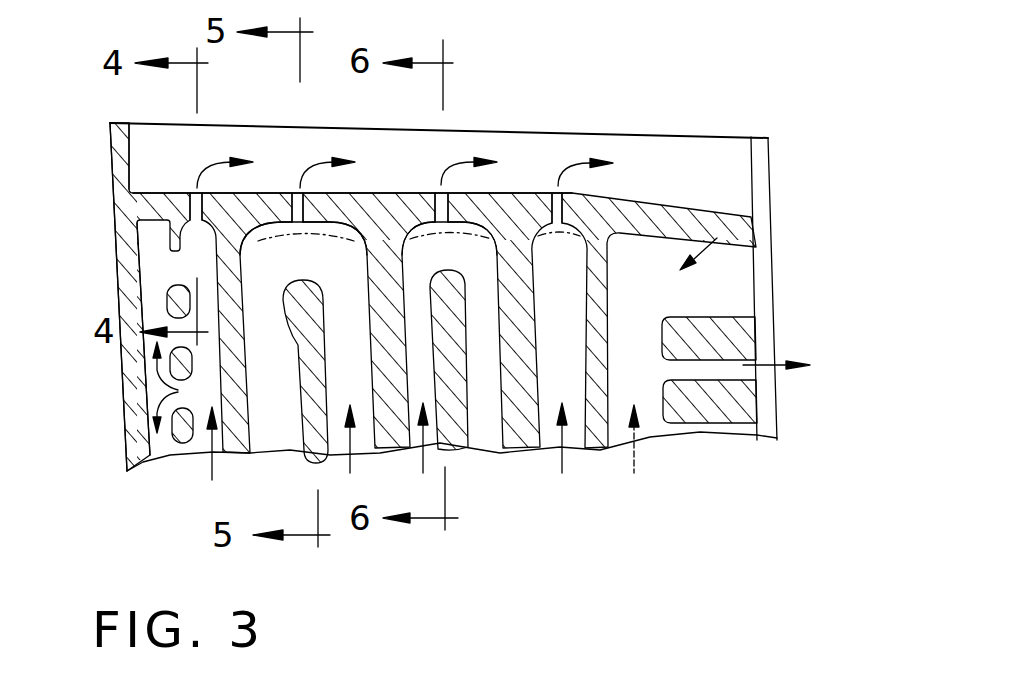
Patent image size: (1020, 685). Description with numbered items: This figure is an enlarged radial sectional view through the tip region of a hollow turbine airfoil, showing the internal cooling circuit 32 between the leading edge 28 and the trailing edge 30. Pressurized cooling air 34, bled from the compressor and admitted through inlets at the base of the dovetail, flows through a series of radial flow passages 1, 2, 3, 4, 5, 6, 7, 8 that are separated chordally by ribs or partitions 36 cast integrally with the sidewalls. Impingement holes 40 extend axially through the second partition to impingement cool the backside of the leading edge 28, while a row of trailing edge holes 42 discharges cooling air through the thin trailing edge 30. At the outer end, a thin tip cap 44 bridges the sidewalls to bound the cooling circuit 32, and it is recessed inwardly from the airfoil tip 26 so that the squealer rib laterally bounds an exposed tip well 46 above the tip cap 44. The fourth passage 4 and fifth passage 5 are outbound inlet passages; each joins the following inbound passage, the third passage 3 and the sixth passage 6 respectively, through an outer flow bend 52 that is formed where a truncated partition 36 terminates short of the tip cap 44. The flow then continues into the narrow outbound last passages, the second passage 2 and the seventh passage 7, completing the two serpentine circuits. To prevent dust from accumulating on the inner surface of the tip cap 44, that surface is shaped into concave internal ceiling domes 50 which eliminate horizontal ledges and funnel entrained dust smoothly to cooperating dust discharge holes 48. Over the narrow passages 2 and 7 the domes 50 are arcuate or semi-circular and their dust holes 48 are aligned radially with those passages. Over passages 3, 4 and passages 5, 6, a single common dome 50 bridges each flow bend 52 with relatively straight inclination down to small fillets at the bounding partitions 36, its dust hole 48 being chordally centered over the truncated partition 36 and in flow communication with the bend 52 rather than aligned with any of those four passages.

The first flow passage 1 is at (170, 438).
The second passage 2 is at (203, 440).
The third passage 3 is at (288, 387).
The fourth passage 4 is at (362, 374).
The fifth passage 5 is at (431, 384).
The sixth passage 6 is at (496, 381).
The seventh passage 7 is at (573, 364).
The eighth passage 8 is at (647, 364).
The airfoil tip 26 is at (663, 130).
The leading edge 28 is at (117, 278).
The trailing edge 30 is at (775, 293).
The internal cooling circuit 32 is at (717, 238).
The cooling air 34 is at (350, 462).
The partition 36 is at (291, 440).
The impingement holes 40 is at (161, 454).
The trailing edge holes 42 is at (725, 376).
The tip cap 44 is at (380, 192).
The tip well 46 is at (714, 175).
The dust discharge hole 48 is at (297, 185).
The internal ceiling dome 50 is at (248, 238).
The outer flow bend 52 is at (351, 274).